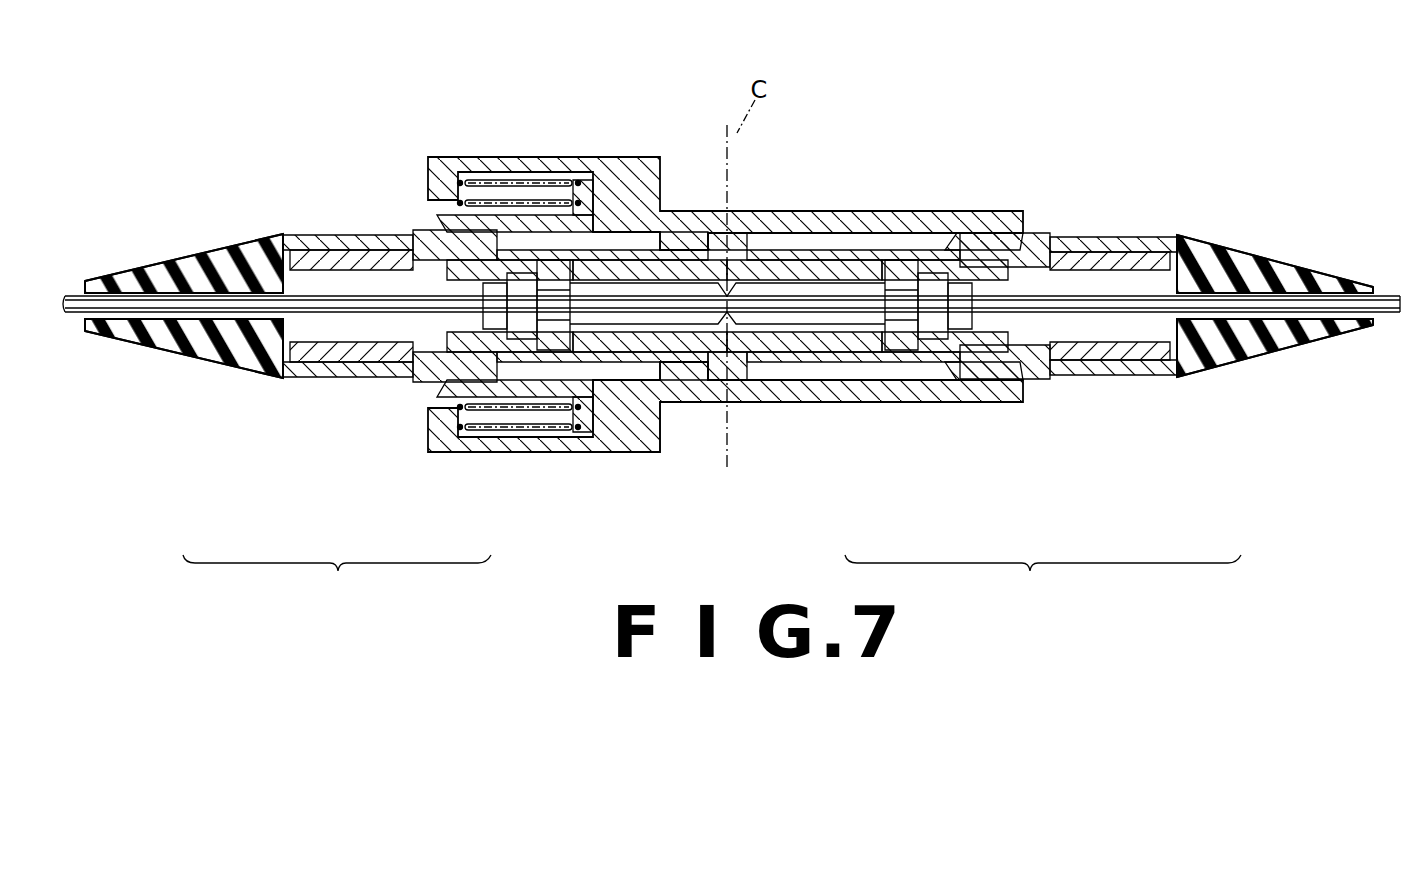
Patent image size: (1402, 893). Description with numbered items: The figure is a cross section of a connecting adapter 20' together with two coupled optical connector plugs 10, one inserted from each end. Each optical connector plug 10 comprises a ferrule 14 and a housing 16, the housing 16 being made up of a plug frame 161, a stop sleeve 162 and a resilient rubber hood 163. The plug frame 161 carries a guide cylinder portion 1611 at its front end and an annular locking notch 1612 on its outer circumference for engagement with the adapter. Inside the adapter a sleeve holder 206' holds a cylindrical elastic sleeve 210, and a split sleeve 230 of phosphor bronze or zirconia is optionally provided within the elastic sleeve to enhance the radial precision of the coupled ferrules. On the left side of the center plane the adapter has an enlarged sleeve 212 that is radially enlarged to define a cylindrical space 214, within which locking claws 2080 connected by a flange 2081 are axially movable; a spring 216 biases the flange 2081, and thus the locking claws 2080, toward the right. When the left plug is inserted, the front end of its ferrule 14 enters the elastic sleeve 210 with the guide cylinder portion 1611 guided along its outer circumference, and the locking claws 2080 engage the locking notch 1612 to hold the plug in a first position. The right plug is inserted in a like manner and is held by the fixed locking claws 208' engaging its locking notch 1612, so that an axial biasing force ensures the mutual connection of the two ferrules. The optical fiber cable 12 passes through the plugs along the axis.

The optical connector plug 10 is at (228, 177).
The optical fiber cable 12 is at (1150, 297).
The ferrule 14 is at (640, 330).
The housing 16 is at (712, 577).
The connecting adapter 20' is at (725, 240).
The plug frame 161 is at (537, 340).
The stop sleeve 162 is at (375, 360).
The rubber hood 163 is at (208, 368).
The sleeve holder 206' is at (748, 257).
The locking claws 208' is at (953, 304).
The elastic sleeve 210 is at (676, 403).
The enlarged sleeve 212 is at (550, 453).
The cylindrical space 214 is at (468, 181).
The spring 216 is at (515, 200).
The split sleeve 230 is at (773, 260).
The guide cylinder portion 1611 is at (640, 250).
The annular locking notch 1612 is at (470, 375).
The locking claws 2080 is at (437, 217).
The flange 2081 is at (580, 200).